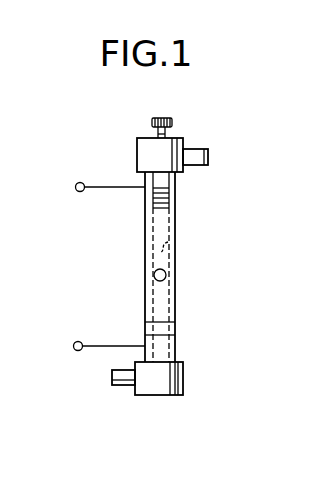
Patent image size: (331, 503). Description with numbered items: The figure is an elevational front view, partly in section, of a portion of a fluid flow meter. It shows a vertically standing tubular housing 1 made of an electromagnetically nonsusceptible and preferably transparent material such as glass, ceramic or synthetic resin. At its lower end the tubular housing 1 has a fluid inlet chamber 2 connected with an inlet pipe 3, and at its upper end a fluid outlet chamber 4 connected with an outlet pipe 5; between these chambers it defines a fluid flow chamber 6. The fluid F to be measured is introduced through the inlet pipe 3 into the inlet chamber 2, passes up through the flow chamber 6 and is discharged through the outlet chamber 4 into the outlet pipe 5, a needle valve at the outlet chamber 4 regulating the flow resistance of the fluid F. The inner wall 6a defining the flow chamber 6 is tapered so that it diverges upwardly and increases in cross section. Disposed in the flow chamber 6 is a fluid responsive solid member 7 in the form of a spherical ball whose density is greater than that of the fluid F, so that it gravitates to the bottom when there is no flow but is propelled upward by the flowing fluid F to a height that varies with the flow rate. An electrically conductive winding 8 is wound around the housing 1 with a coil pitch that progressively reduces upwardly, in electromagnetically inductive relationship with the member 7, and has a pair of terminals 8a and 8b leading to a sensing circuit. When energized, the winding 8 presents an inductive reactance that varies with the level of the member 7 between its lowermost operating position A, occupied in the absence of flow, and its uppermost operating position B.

The tubular housing 1 is at (145, 250).
The fluid inlet chamber 2 is at (183, 378).
The inlet pipe 3 is at (118, 386).
The fluid outlet chamber 4 is at (137, 150).
The outlet pipe 5 is at (198, 149).
The fluid flow chamber 6 is at (163, 231).
The inner wall 6a is at (170, 257).
The fluid responsive solid member 7 is at (167, 277).
The electrically conductive winding 8 is at (165, 213).
The terminal 8a is at (92, 187).
The terminal 8b is at (95, 333).
The lowermost operating position A is at (184, 351).
The uppermost operating position B is at (188, 184).
The fluid F is at (94, 379).